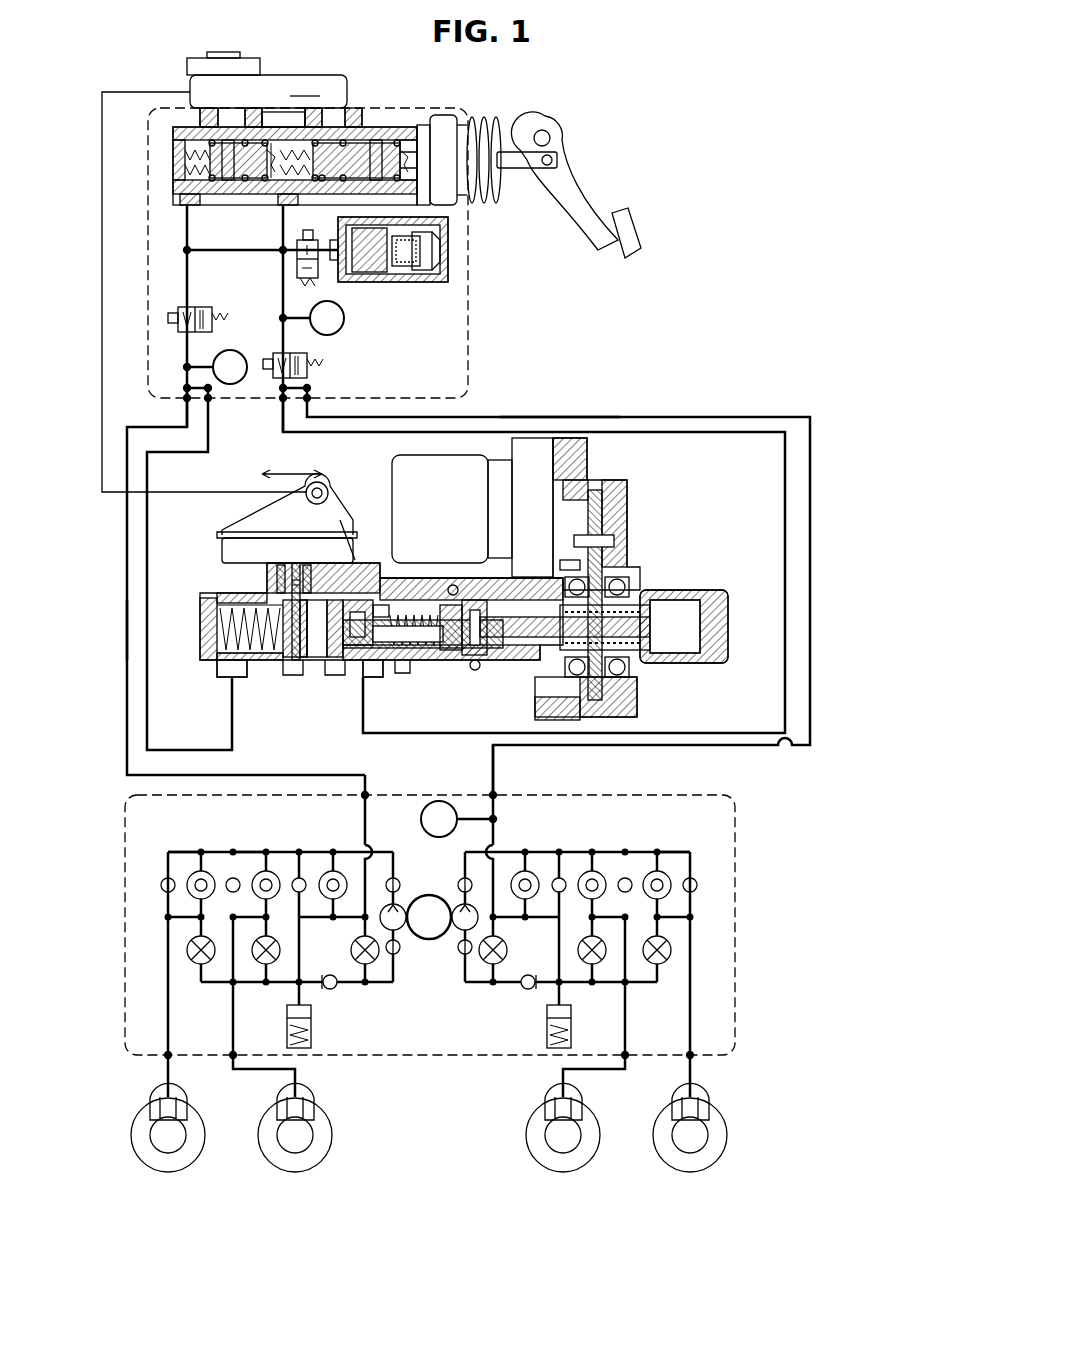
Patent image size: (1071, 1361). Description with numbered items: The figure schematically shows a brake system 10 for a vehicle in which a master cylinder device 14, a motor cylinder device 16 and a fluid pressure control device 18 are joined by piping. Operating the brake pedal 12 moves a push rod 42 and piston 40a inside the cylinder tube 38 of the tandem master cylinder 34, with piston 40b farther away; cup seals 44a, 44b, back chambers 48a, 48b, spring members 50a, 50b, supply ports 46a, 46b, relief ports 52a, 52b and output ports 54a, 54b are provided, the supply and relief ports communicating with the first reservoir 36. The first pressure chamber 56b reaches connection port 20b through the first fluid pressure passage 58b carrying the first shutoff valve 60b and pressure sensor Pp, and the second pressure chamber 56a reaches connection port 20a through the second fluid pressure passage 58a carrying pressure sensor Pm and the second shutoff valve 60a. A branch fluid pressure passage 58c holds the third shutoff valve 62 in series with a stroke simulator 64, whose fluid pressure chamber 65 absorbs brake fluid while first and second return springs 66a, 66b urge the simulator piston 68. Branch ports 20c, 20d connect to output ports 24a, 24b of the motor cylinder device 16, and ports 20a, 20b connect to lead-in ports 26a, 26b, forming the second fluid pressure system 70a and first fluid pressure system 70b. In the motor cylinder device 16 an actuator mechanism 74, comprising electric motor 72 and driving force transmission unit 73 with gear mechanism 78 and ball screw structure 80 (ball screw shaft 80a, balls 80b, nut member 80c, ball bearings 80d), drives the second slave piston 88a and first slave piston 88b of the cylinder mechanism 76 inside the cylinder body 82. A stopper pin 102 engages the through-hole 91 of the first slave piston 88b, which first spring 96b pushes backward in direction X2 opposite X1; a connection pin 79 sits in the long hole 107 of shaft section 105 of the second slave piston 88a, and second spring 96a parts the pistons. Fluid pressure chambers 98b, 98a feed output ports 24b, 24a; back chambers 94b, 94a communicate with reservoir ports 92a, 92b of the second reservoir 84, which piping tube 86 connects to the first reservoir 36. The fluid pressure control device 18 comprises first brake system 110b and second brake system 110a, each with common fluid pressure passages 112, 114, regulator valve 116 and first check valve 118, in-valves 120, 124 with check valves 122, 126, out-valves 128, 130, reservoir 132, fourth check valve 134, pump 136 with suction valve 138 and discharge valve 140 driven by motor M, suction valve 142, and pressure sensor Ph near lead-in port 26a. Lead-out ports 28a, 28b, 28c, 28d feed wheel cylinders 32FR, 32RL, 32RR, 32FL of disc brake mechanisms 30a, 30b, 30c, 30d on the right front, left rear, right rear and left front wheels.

The brake system for a vehicle 10 is at (578, 95).
The brake pedal 12 is at (637, 232).
The master cylinder device 14 is at (480, 308).
The motor cylinder device 16 is at (622, 462).
The fluid pressure control device 18 is at (645, 792).
The connection port 20a is at (283, 400).
The connection port 20b is at (185, 398).
The branch port 20c is at (307, 402).
The branch port 20d is at (210, 400).
The output port 24a is at (363, 677).
The output port 24b is at (215, 686).
The lead-in port 26a is at (500, 794).
The lead-in port 26b is at (370, 793).
The first lead-out port 28a is at (694, 1057).
The second lead-out port 28b is at (627, 1062).
The third lead-out port 28c is at (232, 1062).
The fourth lead-out port 28d is at (166, 1057).
The disc brake mechanism 30a is at (727, 1163).
The disc brake mechanism 30b is at (600, 1163).
The disc brake mechanism 30c is at (333, 1163).
The disc brake mechanism 30d is at (205, 1163).
The wheel cylinder 32FL is at (185, 1108).
The wheel cylinder 32RR is at (313, 1108).
The wheel cylinder 32RL is at (581, 1108).
The wheel cylinder 32FR is at (708, 1108).
The master cylinder 34 is at (378, 125).
The first reservoir 36 is at (272, 75).
The cylinder tube 38 is at (400, 128).
The piston 40a is at (376, 140).
The piston 40b is at (228, 140).
The push rod 42 is at (423, 155).
The cup seal 44a is at (275, 188).
The cup seal 44b is at (262, 181).
The supply port 46a is at (344, 140).
The supply port 46b is at (245, 140).
The back chamber 48a is at (365, 182).
The back chamber 48b is at (248, 210).
The spring member 50a is at (300, 95).
The spring member 50b is at (170, 92).
The relief port 52a is at (317, 125).
The relief port 52b is at (212, 140).
The output port 54a is at (290, 205).
The output port 54b is at (178, 200).
The second pressure chamber 56a is at (344, 160).
The first pressure chamber 56b is at (225, 160).
The second fluid pressure passage 58a is at (280, 316).
The first fluid pressure passage 58b is at (246, 245).
The branch fluid pressure passage 58c is at (255, 255).
The second shutoff valve 60a is at (318, 378).
The first shutoff valve 60b is at (190, 290).
The third shutoff valve 62 is at (316, 280).
The stroke simulator 64 is at (450, 232).
The fluid pressure chamber 65 is at (345, 262).
The first return spring 66a is at (428, 272).
The second return spring 66b is at (405, 275).
The simulator piston 68 is at (370, 275).
The second fluid pressure system 70a is at (565, 416).
The first fluid pressure system 70b is at (125, 627).
The electric motor 72 is at (392, 460).
The driving force transmission unit 73 is at (697, 538).
The actuator mechanism 74 is at (728, 637).
The cylinder mechanism 76 is at (198, 650).
The gear mechanism 78 is at (632, 568).
The connection pin 79 is at (368, 660).
The ball screw structure 80 is at (672, 612).
The ball screw shaft 80a is at (670, 640).
The balls 80b is at (638, 598).
The nut member 80c is at (632, 655).
The ball bearings 80d is at (615, 690).
The cylinder body 82 is at (335, 660).
The second reservoir 84 is at (222, 527).
The piping tube 86 is at (102, 313).
The second slave piston 88a is at (452, 652).
The first slave piston 88b is at (285, 660).
The through-hole 91 is at (318, 660).
The reservoir port 92a is at (353, 535).
The reservoir port 92b is at (280, 570).
The second back chamber 94a is at (478, 650).
The first back chamber 94b is at (297, 660).
The second spring 96a is at (472, 660).
The first spring 96b is at (268, 590).
The second fluid pressure chamber 98a is at (412, 648).
The first fluid pressure chamber 98b is at (212, 610).
The stopper pin 102 is at (302, 660).
The shaft section 105 is at (382, 620).
The long hole 107 is at (378, 595).
The second brake system 110a is at (690, 845).
The first brake system 110b is at (170, 845).
The first common fluid pressure passage 112 is at (248, 852).
The second common fluid pressure passage 114 is at (232, 990).
The regulator valve 116 is at (335, 870).
The first check valve 118 is at (296, 878).
The first in-valve 120 is at (195, 870).
The second check valve 122 is at (165, 878).
The second in-valve 124 is at (262, 870).
The third check valve 126 is at (230, 878).
The first out-valve 128 is at (200, 965).
The second out-valve 130 is at (282, 944).
The reservoir 132 is at (311, 1030).
The fourth check valve 134 is at (334, 990).
The pump 136 is at (460, 947).
The suction valve 138 is at (462, 975).
The discharge valve 140 is at (458, 885).
The suction valve 142 is at (393, 960).
The pressure sensor Pm is at (327, 318).
The pressure sensor Pp is at (216, 367).
The pressure sensor Ph is at (459, 819).
The motor M is at (429, 917).
The direction X1 is at (280, 474).
The arrow mark X2 is at (336, 474).